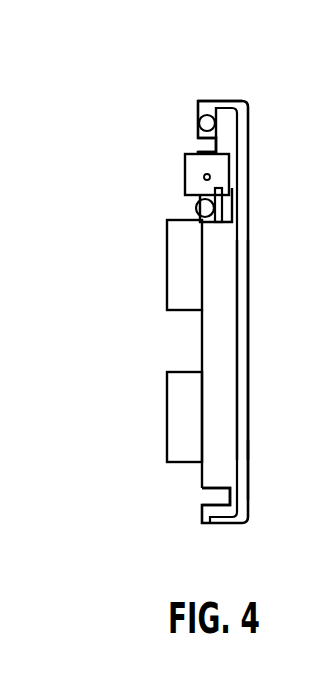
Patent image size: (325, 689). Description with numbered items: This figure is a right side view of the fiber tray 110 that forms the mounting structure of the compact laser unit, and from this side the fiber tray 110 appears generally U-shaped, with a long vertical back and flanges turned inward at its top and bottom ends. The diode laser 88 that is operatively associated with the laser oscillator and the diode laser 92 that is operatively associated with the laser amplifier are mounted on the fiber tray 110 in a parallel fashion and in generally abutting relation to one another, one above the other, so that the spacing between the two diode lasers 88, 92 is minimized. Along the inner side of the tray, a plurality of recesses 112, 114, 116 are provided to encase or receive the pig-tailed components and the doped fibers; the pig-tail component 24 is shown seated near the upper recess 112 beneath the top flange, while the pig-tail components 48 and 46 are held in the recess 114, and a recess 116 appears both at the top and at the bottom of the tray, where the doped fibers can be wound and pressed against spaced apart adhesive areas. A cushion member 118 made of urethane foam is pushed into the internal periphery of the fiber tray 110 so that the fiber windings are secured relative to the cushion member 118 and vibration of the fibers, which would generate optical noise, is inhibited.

The fiber tray 110 is at (248, 160).
The recess 112 is at (197, 111).
The pig-tail component 24 is at (194, 125).
The recess 116 is at (200, 146).
The pig-tail component 48 is at (187, 176).
The recess 114 is at (196, 201).
The pig-tail component 46 is at (195, 210).
The diode laser 88 is at (168, 290).
The cushion member 118 is at (227, 352).
The diode laser 92 is at (168, 433).